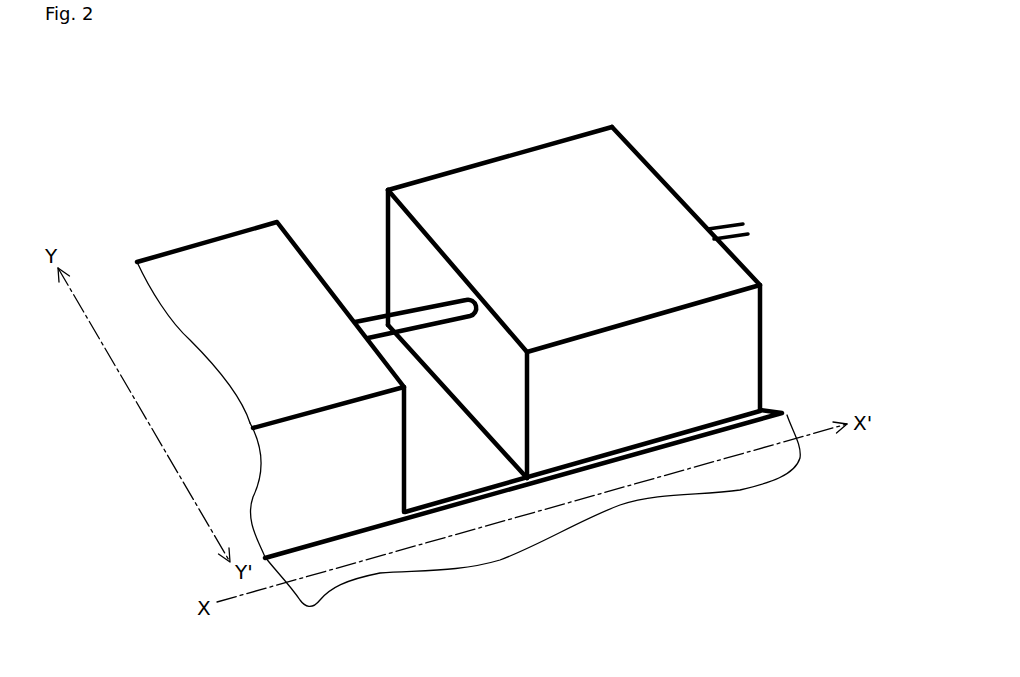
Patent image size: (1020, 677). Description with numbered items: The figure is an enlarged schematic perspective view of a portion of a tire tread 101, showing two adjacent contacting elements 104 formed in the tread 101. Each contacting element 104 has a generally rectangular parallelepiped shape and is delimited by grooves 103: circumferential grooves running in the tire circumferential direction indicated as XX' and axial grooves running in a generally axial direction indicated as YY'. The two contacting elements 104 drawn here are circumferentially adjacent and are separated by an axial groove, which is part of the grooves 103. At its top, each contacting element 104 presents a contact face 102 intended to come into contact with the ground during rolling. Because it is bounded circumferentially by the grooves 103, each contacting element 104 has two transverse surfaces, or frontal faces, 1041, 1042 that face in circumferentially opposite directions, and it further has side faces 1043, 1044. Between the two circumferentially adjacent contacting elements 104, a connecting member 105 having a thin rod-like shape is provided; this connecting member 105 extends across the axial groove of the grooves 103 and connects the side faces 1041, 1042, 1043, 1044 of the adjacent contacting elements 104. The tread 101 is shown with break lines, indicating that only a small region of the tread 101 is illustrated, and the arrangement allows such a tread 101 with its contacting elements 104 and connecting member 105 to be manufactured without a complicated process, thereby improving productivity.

The tread 101 is at (383, 150).
The contact face 102 is at (247, 300).
The grooves 103 is at (362, 307).
The contacting element 104 is at (155, 253).
The connecting member 105 is at (387, 333).
The transverse surface 1041 is at (503, 410).
The transverse surface 1042 is at (410, 438).
The side face 1043 is at (650, 390).
The side face 1044 is at (587, 130).